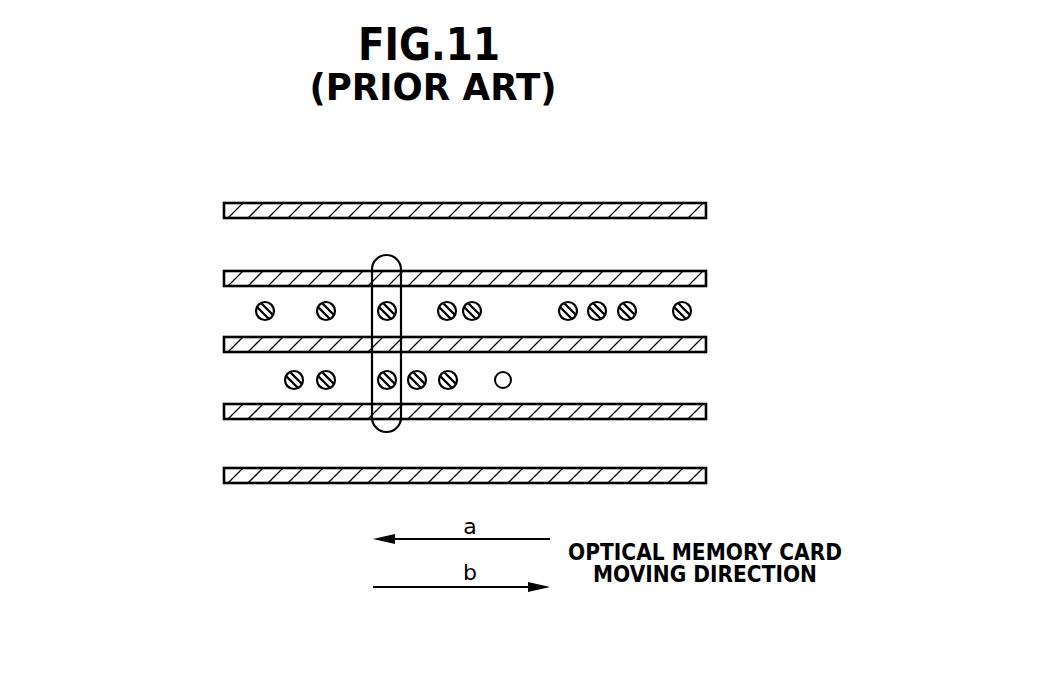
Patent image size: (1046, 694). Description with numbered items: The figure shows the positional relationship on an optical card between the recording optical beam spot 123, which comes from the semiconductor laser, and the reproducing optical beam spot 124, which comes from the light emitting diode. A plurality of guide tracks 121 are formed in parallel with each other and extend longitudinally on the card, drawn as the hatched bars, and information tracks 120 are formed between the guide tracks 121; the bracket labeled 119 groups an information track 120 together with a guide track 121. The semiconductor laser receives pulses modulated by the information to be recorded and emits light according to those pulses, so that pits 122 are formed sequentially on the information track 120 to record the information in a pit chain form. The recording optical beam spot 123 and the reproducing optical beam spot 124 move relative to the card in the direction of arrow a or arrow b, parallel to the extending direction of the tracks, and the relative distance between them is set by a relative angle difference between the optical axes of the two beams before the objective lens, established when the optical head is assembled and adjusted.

The data track 119 is at (394, 399).
The information track 120 is at (255, 373).
The guide track 121 is at (224, 411).
The pit 122 is at (691, 307).
The recording optical beam spot 123 is at (511, 380).
The reproducing optical beam spot 124 is at (388, 255).